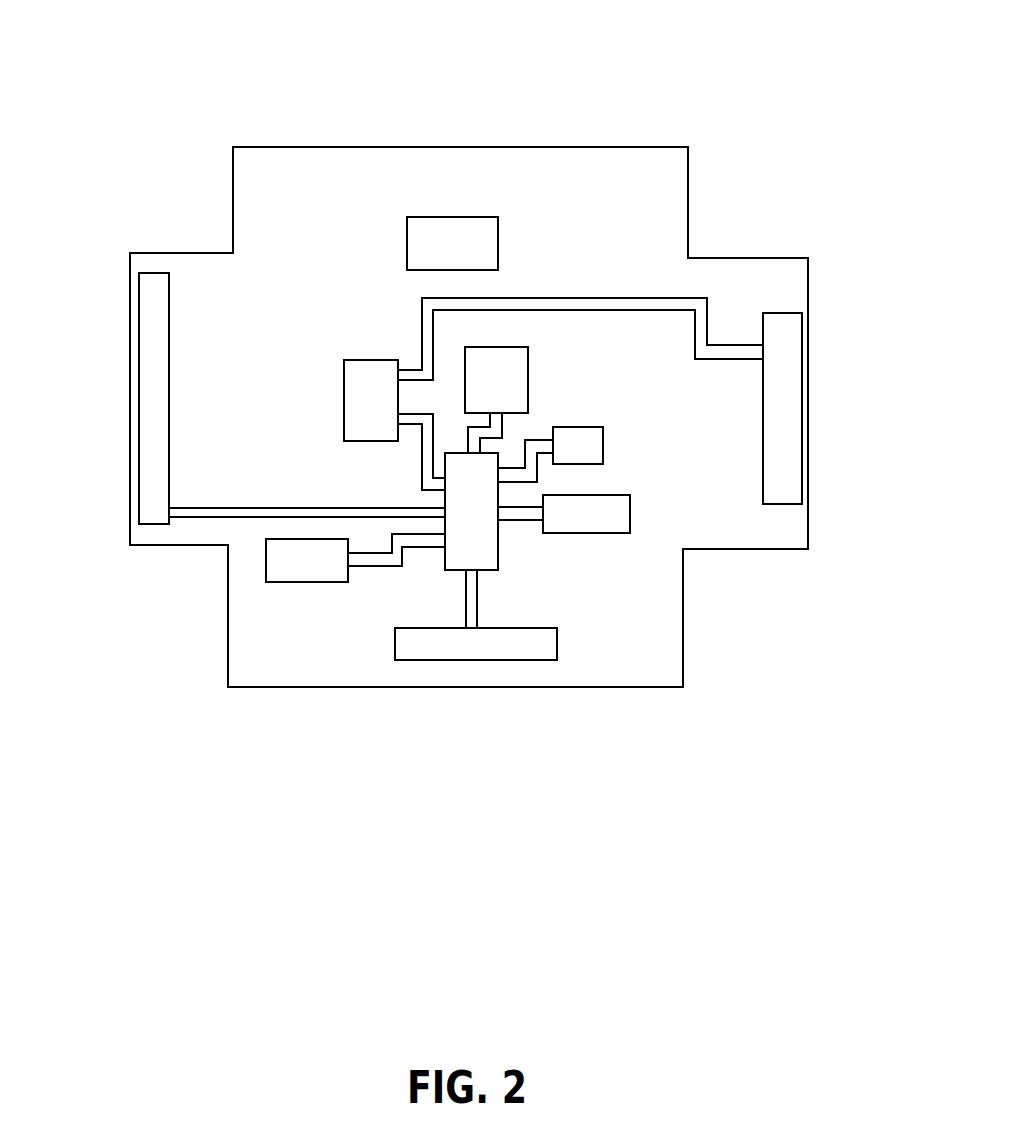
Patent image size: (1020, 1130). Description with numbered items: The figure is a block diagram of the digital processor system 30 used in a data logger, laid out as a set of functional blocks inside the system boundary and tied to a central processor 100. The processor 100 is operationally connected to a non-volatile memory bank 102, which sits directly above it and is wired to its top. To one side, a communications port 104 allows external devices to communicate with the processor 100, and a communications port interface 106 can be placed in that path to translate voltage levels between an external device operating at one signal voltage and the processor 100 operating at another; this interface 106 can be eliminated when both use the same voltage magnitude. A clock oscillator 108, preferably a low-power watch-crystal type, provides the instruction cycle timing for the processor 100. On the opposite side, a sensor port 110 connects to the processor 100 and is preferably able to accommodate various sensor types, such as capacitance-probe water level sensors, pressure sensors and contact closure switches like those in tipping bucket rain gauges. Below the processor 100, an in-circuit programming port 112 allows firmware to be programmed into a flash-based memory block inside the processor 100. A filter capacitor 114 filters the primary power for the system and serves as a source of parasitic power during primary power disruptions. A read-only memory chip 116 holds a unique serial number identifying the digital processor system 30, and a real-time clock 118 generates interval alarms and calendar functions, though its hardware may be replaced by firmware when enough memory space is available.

The digital processor system 30 is at (479, 92).
The processor 100 is at (477, 533).
The non-volatile memory bank 102 is at (497, 380).
The communications port 104 is at (784, 402).
The communications port interface 106 is at (377, 400).
The clock oscillator 108 is at (607, 506).
The sensor port 110 is at (152, 400).
The in-circuit programming port 112 is at (509, 650).
The filter capacitor 114 is at (458, 243).
The read-only memory chip 116 is at (307, 560).
The real-time clock 118 is at (580, 445).